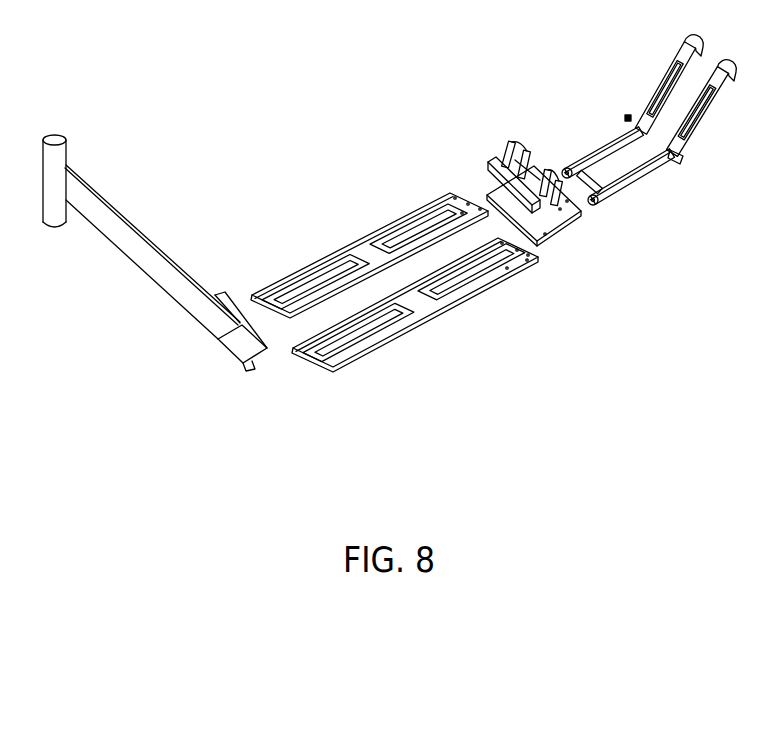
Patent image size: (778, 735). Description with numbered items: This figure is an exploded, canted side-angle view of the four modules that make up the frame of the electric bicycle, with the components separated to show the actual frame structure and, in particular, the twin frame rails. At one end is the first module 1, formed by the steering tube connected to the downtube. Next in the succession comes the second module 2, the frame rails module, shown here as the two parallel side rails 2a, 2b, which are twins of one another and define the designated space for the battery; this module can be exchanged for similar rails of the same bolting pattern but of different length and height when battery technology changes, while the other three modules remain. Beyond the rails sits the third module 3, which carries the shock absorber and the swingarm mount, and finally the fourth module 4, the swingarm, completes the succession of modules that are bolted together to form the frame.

The first module 1 is at (158, 243).
The second module 2 is at (443, 270).
The first rail 2a is at (430, 318).
The second rail 2b is at (340, 252).
The third module 3 is at (493, 163).
The fourth module 4 is at (598, 147).